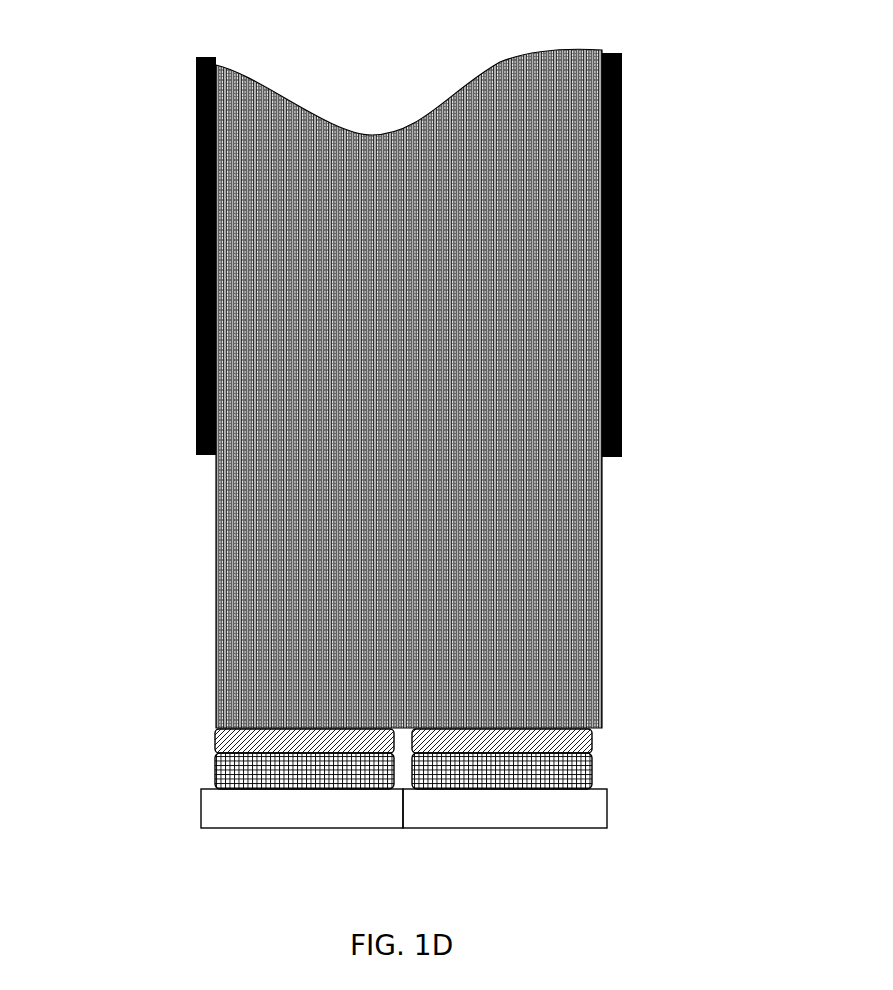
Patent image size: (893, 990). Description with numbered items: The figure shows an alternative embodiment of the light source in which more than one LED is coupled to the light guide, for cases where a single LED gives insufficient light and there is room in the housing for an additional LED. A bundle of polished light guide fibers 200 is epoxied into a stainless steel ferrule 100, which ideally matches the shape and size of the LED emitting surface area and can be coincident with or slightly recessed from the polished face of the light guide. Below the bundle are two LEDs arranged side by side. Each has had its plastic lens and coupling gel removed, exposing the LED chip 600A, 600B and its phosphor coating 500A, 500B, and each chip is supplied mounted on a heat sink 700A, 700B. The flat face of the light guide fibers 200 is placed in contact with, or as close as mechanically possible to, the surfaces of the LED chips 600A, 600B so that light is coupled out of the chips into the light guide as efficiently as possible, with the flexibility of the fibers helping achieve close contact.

The light guide fibers 200 is at (320, 184).
The stainless steel ferrule 100 is at (620, 218).
The phosphor coating 500A is at (215, 738).
The phosphor coating 500B is at (592, 740).
The LED chip 600A is at (215, 770).
The LED chip 600B is at (595, 770).
The heat sink 700A is at (317, 830).
The heat sink 700B is at (460, 830).